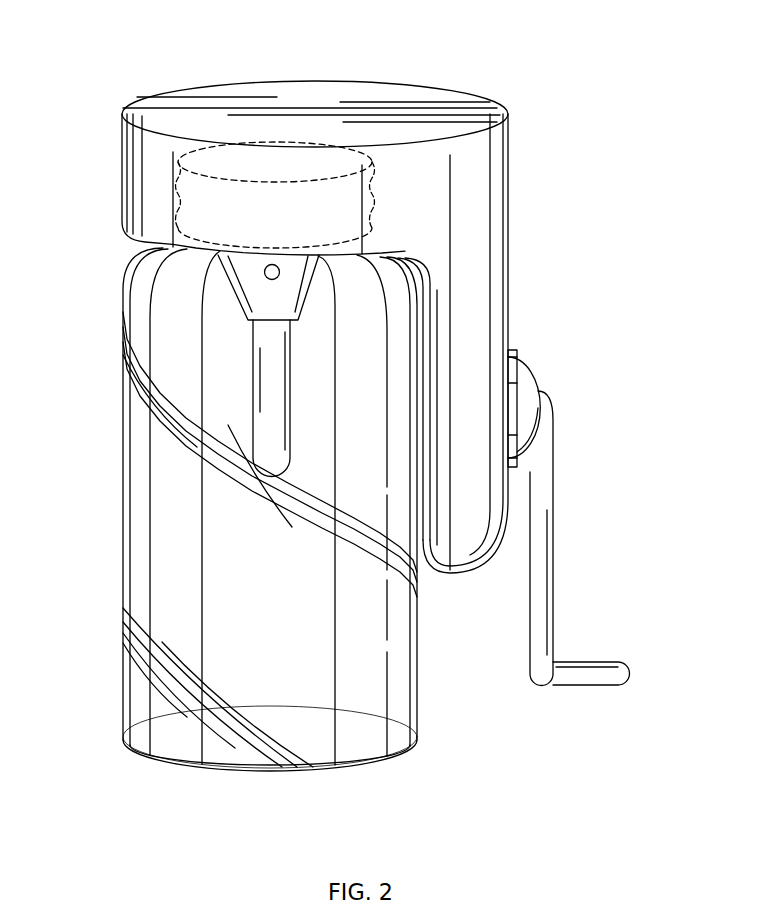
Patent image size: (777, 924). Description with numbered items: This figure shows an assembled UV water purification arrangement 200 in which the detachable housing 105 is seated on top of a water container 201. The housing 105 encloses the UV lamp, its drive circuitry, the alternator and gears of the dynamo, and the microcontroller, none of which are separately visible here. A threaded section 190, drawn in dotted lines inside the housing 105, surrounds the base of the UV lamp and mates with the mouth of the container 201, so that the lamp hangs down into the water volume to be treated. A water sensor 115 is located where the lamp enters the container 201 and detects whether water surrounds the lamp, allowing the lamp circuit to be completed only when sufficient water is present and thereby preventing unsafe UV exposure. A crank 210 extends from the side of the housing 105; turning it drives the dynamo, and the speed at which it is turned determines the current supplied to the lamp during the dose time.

The blender assembly 200 is at (537, 24).
The housing 105 is at (137, 105).
The threaded section 190 is at (377, 207).
The water sensor 115 is at (264, 276).
The container 201 is at (122, 686).
The crank handle 210 is at (553, 618).